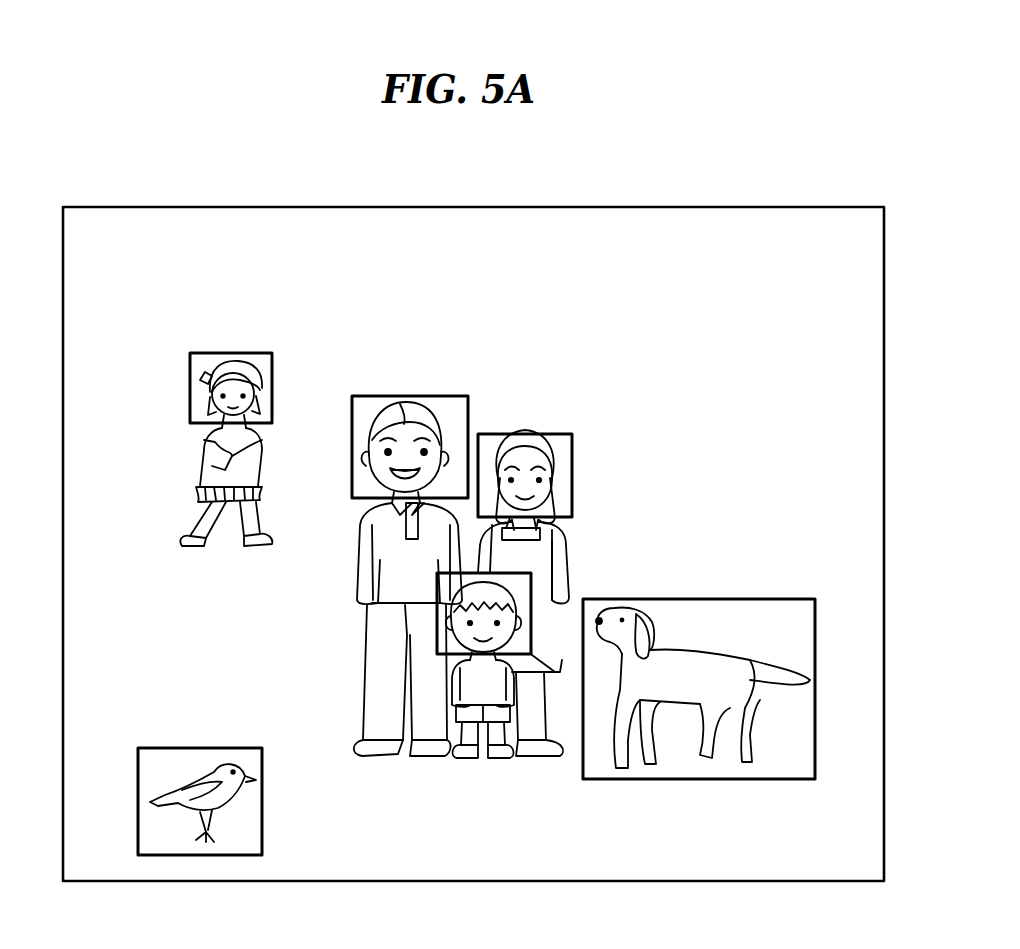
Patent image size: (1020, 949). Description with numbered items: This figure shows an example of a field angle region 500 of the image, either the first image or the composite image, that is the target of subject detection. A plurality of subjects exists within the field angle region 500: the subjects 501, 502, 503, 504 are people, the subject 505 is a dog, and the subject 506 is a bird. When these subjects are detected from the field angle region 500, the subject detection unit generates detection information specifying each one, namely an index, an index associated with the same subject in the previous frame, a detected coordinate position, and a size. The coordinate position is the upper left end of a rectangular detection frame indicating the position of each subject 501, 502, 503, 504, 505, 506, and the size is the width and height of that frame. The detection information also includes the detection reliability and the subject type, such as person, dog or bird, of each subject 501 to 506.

The field angle region 500 is at (703, 207).
The subject 501 is at (240, 353).
The subject 502 is at (443, 396).
The subject 503 is at (560, 434).
The subject 504 is at (535, 588).
The subject 505 is at (745, 599).
The subject 506 is at (198, 748).